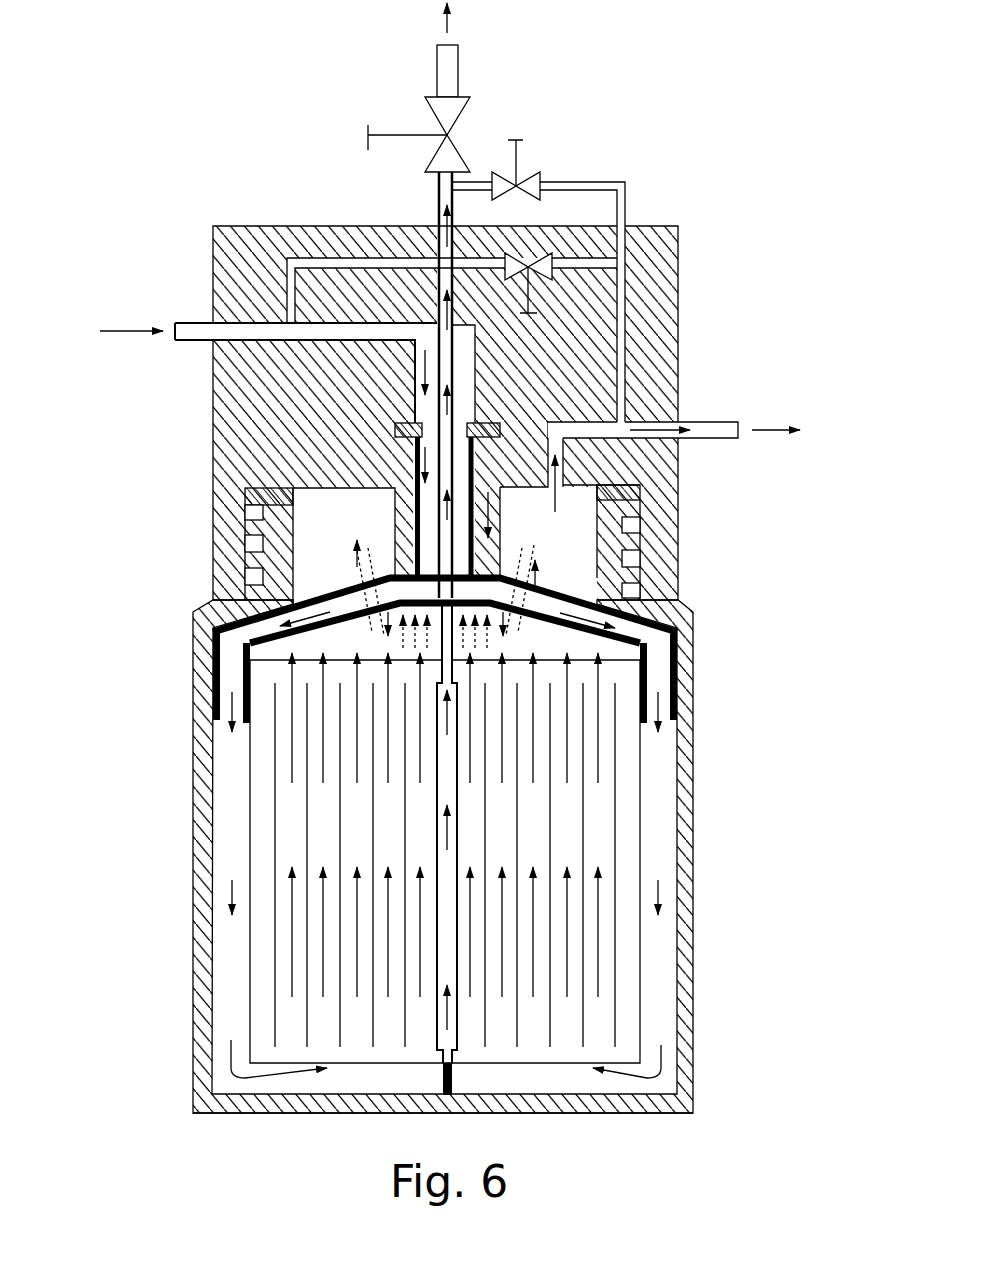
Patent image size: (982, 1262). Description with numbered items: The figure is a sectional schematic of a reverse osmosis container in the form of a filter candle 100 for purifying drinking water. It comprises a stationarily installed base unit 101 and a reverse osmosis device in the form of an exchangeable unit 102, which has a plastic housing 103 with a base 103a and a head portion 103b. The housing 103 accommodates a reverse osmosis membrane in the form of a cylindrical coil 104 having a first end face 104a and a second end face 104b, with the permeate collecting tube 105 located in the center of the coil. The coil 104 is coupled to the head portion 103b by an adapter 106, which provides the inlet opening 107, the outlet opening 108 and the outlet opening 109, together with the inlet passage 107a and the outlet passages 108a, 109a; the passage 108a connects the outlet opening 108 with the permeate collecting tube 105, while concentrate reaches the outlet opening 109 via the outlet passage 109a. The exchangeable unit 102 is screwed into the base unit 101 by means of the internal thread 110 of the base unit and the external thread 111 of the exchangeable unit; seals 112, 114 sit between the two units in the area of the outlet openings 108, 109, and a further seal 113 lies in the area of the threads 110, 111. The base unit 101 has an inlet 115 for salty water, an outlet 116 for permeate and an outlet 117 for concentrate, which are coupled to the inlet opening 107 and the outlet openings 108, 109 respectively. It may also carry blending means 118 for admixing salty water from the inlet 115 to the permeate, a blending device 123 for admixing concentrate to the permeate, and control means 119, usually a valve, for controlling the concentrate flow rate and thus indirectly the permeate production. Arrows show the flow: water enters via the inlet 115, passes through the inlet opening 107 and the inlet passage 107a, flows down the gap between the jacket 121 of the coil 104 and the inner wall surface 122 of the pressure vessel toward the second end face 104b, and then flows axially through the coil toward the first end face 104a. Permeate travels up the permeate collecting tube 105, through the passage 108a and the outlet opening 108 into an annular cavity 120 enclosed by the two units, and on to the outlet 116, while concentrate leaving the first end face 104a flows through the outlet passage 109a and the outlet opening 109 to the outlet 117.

The filter candle 100 is at (196, 117).
The base unit 101 is at (680, 224).
The exchangeable unit 102 is at (697, 1113).
The plastic housing 103 is at (682, 932).
The base 103a is at (178, 1095).
The head portion 103b is at (116, 420).
The cylindrical coil 104 is at (550, 778).
The first end face 104a is at (575, 656).
The second end face 104b is at (660, 1073).
The permeate collecting tube 105 is at (457, 993).
The adapter 106 is at (213, 692).
The inlet opening 107 is at (425, 408).
The inlet passage 107a is at (247, 490).
The outlet opening 108 is at (600, 600).
The outlet passage 108a is at (372, 630).
The outlet opening 109 is at (452, 420).
The outlet passage 109a is at (452, 443).
The internal thread 110 is at (642, 590).
The external thread 111 is at (243, 572).
The seal 112 is at (420, 427).
The seal 113 is at (642, 497).
The seal 114 is at (556, 442).
The inlet 115 is at (188, 323).
The outlet 116 is at (708, 430).
The outlet 117 is at (455, 72).
The blending means 118 is at (530, 252).
The control means 119 is at (455, 133).
The annular cavity 120 is at (347, 523).
The jacket 121 is at (253, 1013).
The inner wall surface 122 is at (228, 812).
The blending device 123 is at (542, 168).